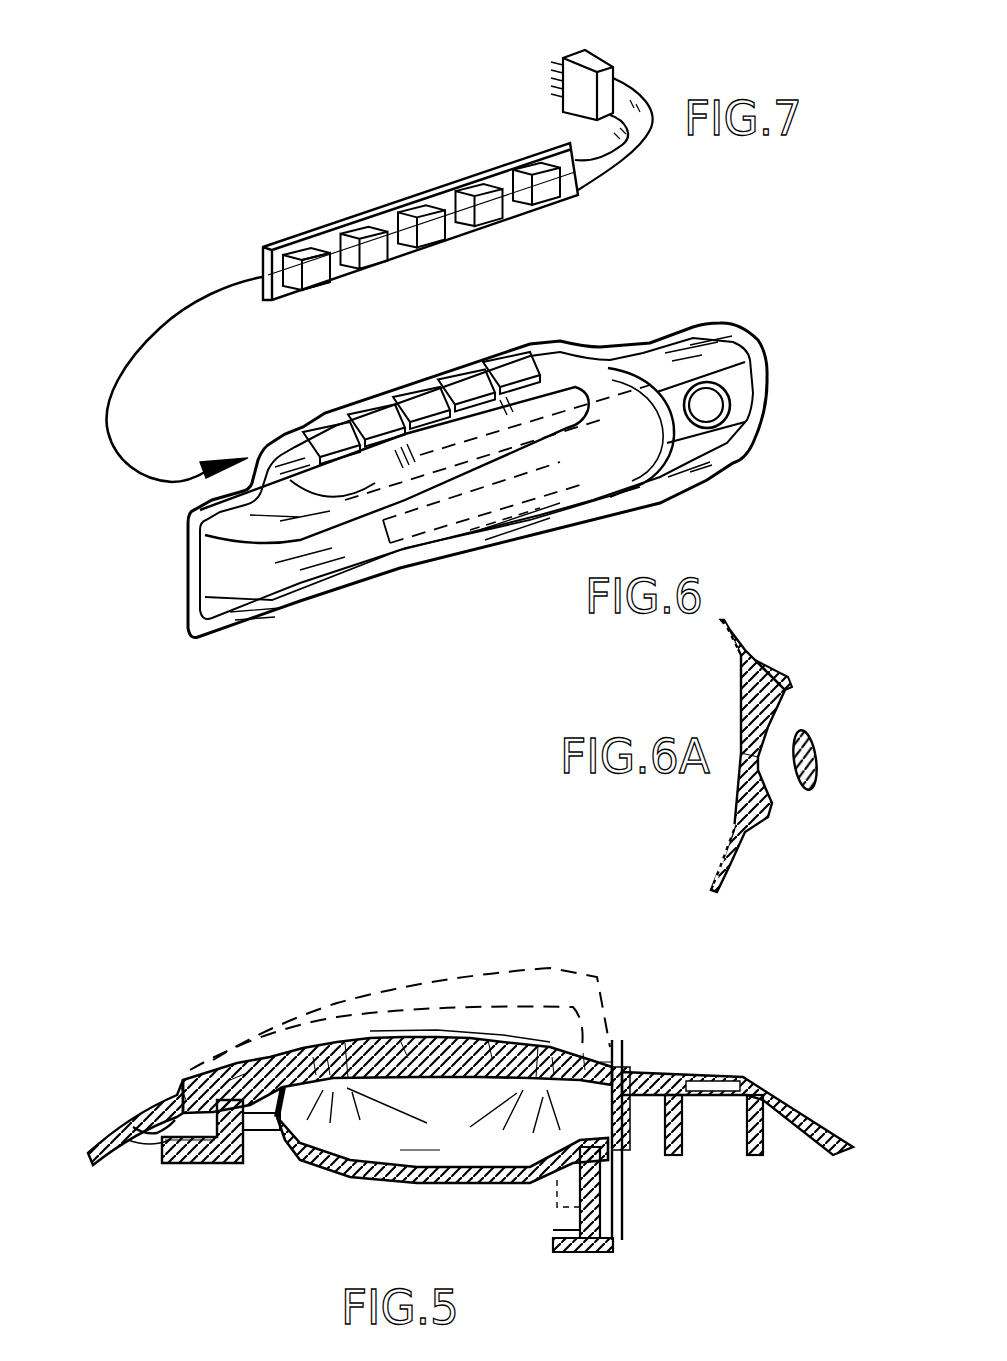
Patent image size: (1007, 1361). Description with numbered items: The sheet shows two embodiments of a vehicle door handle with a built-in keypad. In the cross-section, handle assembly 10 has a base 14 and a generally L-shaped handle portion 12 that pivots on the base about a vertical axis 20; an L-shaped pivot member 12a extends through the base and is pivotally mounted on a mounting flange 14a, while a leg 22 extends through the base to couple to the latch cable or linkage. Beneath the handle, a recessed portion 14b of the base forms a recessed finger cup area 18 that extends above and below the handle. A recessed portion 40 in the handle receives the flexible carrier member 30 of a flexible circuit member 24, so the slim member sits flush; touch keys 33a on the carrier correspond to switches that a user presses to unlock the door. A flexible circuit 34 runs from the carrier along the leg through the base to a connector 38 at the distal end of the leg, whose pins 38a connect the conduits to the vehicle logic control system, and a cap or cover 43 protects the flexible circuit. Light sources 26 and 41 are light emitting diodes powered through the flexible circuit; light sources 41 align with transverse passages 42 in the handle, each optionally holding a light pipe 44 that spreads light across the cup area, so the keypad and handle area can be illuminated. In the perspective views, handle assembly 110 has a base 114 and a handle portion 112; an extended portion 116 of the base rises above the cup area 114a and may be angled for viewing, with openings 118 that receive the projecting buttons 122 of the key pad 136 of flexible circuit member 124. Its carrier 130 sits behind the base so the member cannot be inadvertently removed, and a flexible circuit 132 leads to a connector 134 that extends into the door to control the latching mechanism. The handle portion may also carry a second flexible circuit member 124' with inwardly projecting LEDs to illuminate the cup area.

In FIG. 5, the handle assembly 10 is at (751, 1030).
In FIG. 5, the handle portion 12 is at (443, 970).
In FIG. 5, the L-shaped pivot member 12a is at (225, 1171).
In FIG. 5, the base 14 is at (803, 1107).
In FIG. 5, the mounting flange 14a is at (143, 1148).
In FIG. 5, the recessed portion 14b is at (383, 1153).
In FIG. 5, the recessed finger cup area 18 is at (440, 1162).
In FIG. 5, the vertical axis 20 is at (179, 1165).
In FIG. 5, the leg 22 is at (614, 1037).
In FIG. 5, the flexible circuit member 24 is at (366, 1028).
In FIG. 5, the light sources 26 is at (347, 1047).
In FIG. 5, the flexible carrier member 30 is at (490, 1047).
In FIG. 5, the touch keys 33a is at (403, 1035).
In FIG. 5, the flexible circuit 34 is at (613, 1033).
In FIG. 5, the connector 38 is at (592, 1266).
In FIG. 5, the pins 38a is at (542, 1247).
In FIG. 5, the recessed portion 40 is at (349, 1111).
In FIG. 5, the light sources 41 is at (313, 1057).
In FIG. 5, the transverse passages 42 is at (327, 1057).
In FIG. 5, the cap or cover 43 is at (613, 1062).
In FIG. 5, the light pipe 44 is at (247, 1073).
In FIG. 6, the handle assembly 110 is at (398, 600).
In FIG. 6, the handle portion 112 is at (522, 508).
In FIG. 6A, the handle portion 112 is at (828, 724).
In FIG. 6, the base 114 is at (703, 477).
In FIG. 6, the cup area 114a is at (333, 488).
In FIG. 6A, the cup area 114a is at (738, 787).
In FIG. 6, the extended portion 116 is at (585, 345).
In FIG. 6A, the extended portion 116 is at (752, 647).
In FIG. 6, the openings 118 is at (477, 370).
In FIG. 7, the projecting buttons 122 is at (305, 252).
In FIG. 6A, the projecting buttons 122 is at (775, 663).
In FIG. 7, the flexible circuit member 124 is at (421, 181).
In FIG. 6, the second flexible circuit member 124' is at (446, 538).
In FIG. 7, the carrier 130 is at (482, 173).
In FIG. 7, the flexible circuit 132 is at (647, 143).
In FIG. 7, the connector 134 is at (597, 55).
In FIG. 7, the key pad 136 is at (283, 245).